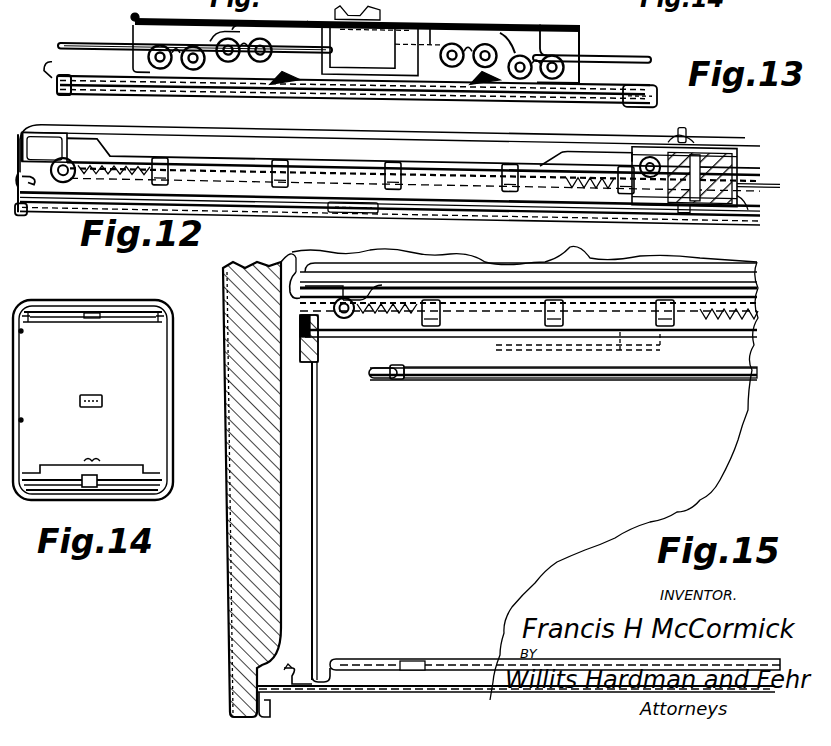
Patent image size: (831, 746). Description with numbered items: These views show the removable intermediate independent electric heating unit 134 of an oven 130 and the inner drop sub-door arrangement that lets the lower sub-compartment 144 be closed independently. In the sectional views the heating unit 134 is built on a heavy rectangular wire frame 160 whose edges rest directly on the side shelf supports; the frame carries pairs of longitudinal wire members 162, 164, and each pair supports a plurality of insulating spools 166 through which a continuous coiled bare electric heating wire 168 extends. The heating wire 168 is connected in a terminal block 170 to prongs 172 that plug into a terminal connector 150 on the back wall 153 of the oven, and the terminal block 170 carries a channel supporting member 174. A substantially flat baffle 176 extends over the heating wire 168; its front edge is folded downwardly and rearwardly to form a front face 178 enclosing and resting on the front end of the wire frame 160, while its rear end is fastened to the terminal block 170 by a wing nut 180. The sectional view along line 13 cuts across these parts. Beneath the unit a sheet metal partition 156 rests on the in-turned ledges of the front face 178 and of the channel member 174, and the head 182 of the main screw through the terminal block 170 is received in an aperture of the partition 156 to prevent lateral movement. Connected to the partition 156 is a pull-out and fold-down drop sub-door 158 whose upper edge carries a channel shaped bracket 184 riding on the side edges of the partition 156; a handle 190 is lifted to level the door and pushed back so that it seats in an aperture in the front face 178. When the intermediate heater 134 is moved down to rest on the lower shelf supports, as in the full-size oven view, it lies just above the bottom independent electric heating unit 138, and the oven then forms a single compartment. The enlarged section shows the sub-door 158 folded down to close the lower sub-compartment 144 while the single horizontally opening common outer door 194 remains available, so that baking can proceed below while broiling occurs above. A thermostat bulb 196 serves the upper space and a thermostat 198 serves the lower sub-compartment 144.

In FIG. 12, the section line 13— 13 is at (346, 219).
In FIG. 14, the oven 130 is at (192, 300).
In FIG. 15, the oven 130 is at (756, 499).
In FIG. 13, the intermediate independent electric heating unit 134 is at (250, 17).
In FIG. 12, the intermediate independent electric heating unit 134 is at (545, 154).
In FIG. 14, the intermediate independent electric heating unit 134 is at (110, 320).
In FIG. 15, the intermediate independent electric heating unit 134 is at (548, 270).
In FIG. 14, the bottom independent electric heating unit 138 is at (140, 490).
In FIG. 15, the bottom independent electric heating unit 138 is at (382, 660).
In FIG. 15, the lower sub-compartment 144 is at (510, 494).
In FIG. 14, the terminal connector 150 is at (86, 394).
In FIG. 14, the back wall 153 is at (136, 416).
In FIG. 13, the sheet metal partition 156 is at (592, 84).
In FIG. 12, the sheet metal partition 156 is at (603, 222).
In FIG. 15, the sheet metal partition 156 is at (754, 376).
In FIG. 13, the drop sub-door 158 is at (572, 104).
In FIG. 12, the drop sub-door 158 is at (193, 214).
In FIG. 15, the drop sub-door 158 is at (514, 348).
In FIG. 13, the rectangular wire frame 160 is at (650, 58).
In FIG. 12, the rectangular wire frame 160 is at (568, 166).
In FIG. 15, the rectangular wire frame 160 is at (756, 306).
In FIG. 13, the longitudinal wire member 162 is at (160, 40).
In FIG. 12, the longitudinal wire member 162 is at (205, 164).
In FIG. 13, the longitudinal wire member 164 is at (470, 60).
In FIG. 13, the insulating spool 166 is at (148, 58).
In FIG. 12, the insulating spool 166 is at (392, 163).
In FIG. 12, the coiled bare electric heating wire 168 is at (590, 185).
In FIG. 15, the coiled bare electric heating wire 168 is at (756, 337).
In FIG. 13, the terminal block 170 is at (284, 74).
In FIG. 12, the terminal block 170 is at (740, 168).
In FIG. 12, the prong 172 is at (760, 188).
In FIG. 12, the channel supporting member 174 is at (748, 210).
In FIG. 13, the baffle 176 is at (523, 22).
In FIG. 12, the baffle 176 is at (166, 128).
In FIG. 15, the baffle 176 is at (752, 280).
In FIG. 12, the front face 178 is at (12, 155).
In FIG. 15, the front face 178 is at (295, 256).
In FIG. 13, the wing nut 180 is at (382, 8).
In FIG. 12, the wing nut 180 is at (690, 132).
In FIG. 12, the screw head 182 is at (684, 213).
In FIG. 13, the channel shaped bracket 184 is at (48, 66).
In FIG. 12, the channel shaped bracket 184 is at (380, 212).
In FIG. 15, the channel shaped bracket 184 is at (320, 355).
In FIG. 12, the handle 190 is at (18, 216).
In FIG. 15, the handle 190 is at (322, 640).
In FIG. 15, the outer door 194 is at (232, 607).
In FIG. 14, the thermostat bulb 196 is at (20, 330).
In FIG. 14, the thermostat 198 is at (22, 421).
In FIG. 15, the thermostat 198 is at (522, 380).